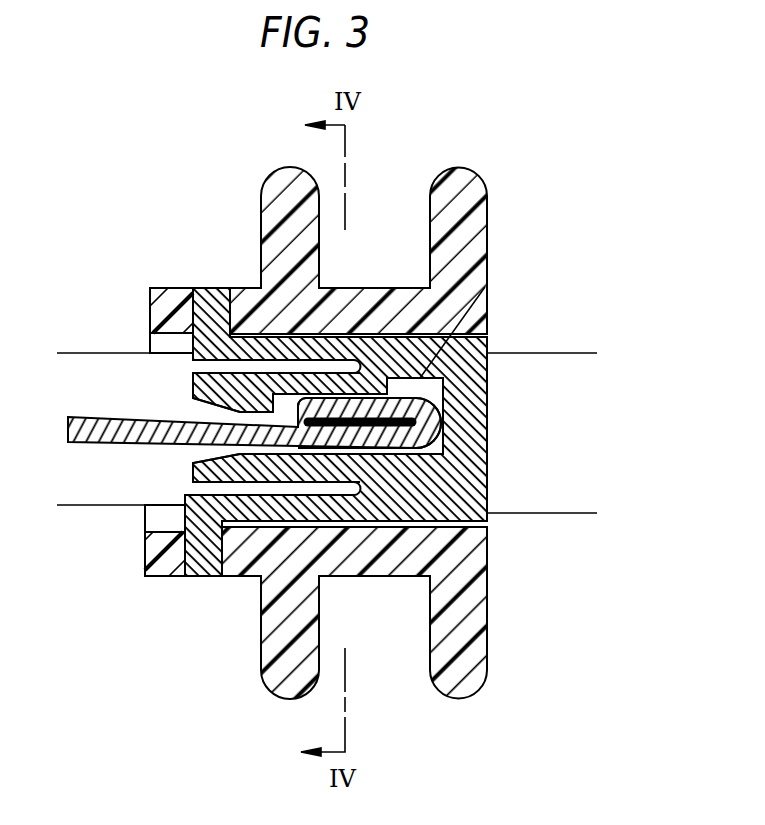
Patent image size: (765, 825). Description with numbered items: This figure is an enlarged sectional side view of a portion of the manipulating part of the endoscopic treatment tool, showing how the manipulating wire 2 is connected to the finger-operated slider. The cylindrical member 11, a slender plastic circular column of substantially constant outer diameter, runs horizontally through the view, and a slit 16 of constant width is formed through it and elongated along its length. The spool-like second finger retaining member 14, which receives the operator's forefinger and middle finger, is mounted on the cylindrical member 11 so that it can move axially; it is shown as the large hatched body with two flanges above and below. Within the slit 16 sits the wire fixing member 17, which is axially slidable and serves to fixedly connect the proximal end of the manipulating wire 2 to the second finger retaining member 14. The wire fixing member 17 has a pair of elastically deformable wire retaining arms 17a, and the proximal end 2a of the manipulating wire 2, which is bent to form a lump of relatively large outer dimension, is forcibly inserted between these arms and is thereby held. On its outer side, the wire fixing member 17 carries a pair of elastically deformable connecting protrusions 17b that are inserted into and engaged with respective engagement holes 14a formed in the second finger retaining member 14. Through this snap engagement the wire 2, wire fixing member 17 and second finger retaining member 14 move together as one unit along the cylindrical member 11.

The manipulating wire 2 is at (82, 420).
The proximal end of the manipulating wire 2a is at (375, 448).
The cylindrical member 11 is at (557, 513).
The second finger retaining member 14 is at (470, 215).
The engagement holes 14a is at (175, 327).
The slit 16 is at (550, 372).
The wire fixing member 17 is at (467, 503).
The wire retaining arms 17a is at (207, 387).
The connecting protrusions 17b is at (218, 295).